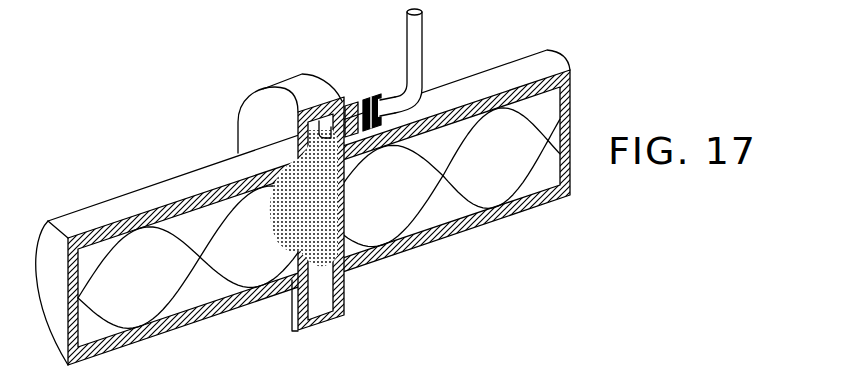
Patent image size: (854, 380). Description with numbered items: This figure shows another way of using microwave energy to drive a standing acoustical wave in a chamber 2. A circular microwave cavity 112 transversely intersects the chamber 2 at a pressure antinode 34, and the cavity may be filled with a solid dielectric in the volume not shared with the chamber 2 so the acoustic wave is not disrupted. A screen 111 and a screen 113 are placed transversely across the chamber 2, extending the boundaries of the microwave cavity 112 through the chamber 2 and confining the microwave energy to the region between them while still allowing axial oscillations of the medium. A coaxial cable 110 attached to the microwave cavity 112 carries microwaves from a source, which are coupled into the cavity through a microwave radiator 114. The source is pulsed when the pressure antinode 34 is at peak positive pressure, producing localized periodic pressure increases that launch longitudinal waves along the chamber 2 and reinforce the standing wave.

The chamber 2 is at (192, 182).
The pressure antinode 34 is at (335, 216).
The coaxial cable 110 is at (412, 35).
The screen 111 is at (285, 230).
The circular microwave cavity 112 is at (274, 122).
The screen 113 is at (338, 175).
The microwave radiator 114 is at (300, 133).